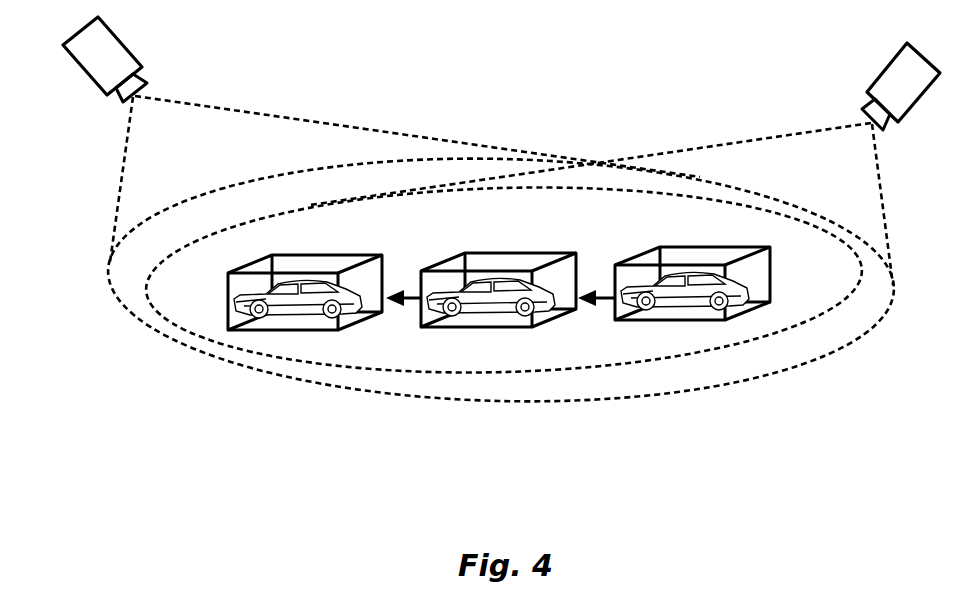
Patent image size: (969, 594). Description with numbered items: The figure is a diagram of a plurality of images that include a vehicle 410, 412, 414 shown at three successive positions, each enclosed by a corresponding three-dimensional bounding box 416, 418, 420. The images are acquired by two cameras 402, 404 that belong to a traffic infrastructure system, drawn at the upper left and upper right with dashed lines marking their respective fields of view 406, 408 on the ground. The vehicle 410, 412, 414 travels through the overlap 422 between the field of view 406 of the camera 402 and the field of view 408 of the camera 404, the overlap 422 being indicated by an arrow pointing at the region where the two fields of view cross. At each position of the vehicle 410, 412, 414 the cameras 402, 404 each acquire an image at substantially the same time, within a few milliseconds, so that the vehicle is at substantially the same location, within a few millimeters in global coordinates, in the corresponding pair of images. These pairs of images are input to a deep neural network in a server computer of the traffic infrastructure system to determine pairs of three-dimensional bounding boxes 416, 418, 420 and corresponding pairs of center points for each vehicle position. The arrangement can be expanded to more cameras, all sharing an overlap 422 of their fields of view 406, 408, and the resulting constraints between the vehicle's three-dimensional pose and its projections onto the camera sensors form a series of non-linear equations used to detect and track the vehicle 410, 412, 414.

The camera 402 is at (83, 70).
The camera 404 is at (892, 67).
The field of view 406 is at (122, 293).
The field of view 408 is at (860, 338).
The vehicle 410 is at (293, 315).
The vehicle 412 is at (487, 310).
The vehicle 414 is at (683, 312).
The 3D bounding box 416 is at (330, 330).
The 3D bounding box 418 is at (522, 327).
The 3D bounding box 420 is at (712, 322).
The overlap 422 is at (584, 216).